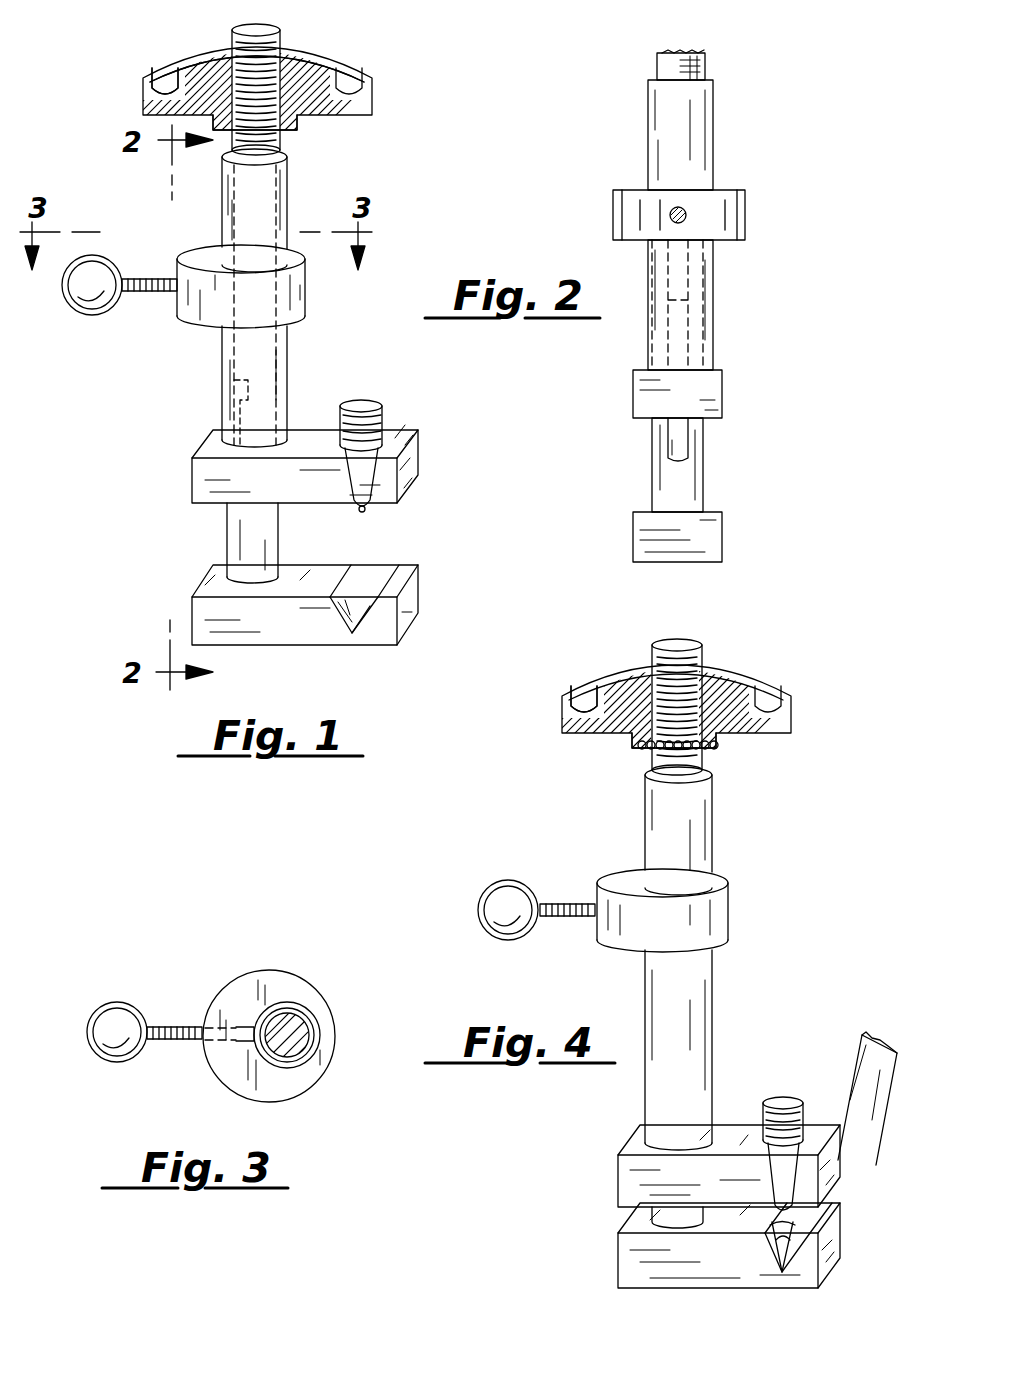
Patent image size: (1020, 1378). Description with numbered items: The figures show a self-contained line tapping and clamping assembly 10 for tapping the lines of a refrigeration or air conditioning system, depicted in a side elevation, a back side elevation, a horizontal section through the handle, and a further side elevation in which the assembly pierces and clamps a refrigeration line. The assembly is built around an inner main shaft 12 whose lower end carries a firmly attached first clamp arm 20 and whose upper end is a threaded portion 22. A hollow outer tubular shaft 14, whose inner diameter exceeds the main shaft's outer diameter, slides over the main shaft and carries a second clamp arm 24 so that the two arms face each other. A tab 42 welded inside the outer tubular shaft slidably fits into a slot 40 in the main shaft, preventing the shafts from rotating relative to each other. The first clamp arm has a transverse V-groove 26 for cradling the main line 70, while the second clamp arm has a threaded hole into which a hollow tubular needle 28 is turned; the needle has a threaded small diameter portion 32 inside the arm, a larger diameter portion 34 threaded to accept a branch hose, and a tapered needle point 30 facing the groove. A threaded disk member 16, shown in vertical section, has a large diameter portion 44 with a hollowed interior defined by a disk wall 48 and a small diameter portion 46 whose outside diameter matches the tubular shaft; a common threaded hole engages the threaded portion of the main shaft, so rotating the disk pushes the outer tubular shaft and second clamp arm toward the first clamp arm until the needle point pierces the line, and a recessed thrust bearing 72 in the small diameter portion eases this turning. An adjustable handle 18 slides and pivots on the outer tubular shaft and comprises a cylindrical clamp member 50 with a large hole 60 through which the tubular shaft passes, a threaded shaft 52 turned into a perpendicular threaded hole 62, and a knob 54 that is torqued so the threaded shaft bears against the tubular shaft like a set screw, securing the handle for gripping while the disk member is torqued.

In FIG. 1, the line tapping and clamping assembly 10 is at (158, 428).
In FIG. 4, the line tapping and clamping assembly 10 is at (567, 1103).
In FIG. 1, the inner main shaft 12 is at (270, 32).
In FIG. 2, the inner main shaft 12 is at (705, 56).
In FIG. 3, the inner main shaft 12 is at (310, 1050).
In FIG. 4, the inner main shaft 12 is at (702, 642).
In FIG. 1, the outer tubular shaft 14 is at (288, 212).
In FIG. 2, the outer tubular shaft 14 is at (714, 106).
In FIG. 3, the outer tubular shaft 14 is at (322, 1028).
In FIG. 4, the outer tubular shaft 14 is at (713, 830).
In FIG. 1, the threaded disk member 16 is at (372, 90).
In FIG. 4, the threaded disk member 16 is at (792, 710).
In FIG. 1, the adjustable handle 18 is at (88, 318).
In FIG. 3, the adjustable handle 18 is at (100, 1060).
In FIG. 4, the adjustable handle 18 is at (490, 890).
In FIG. 1, the first clamp arm 20 is at (400, 610).
In FIG. 2, the first clamp arm 20 is at (723, 540).
In FIG. 4, the first clamp arm 20 is at (618, 1255).
In FIG. 1, the threaded portion 22 is at (286, 143).
In FIG. 1, the second clamp arm 24 is at (416, 470).
In FIG. 2, the second clamp arm 24 is at (723, 395).
In FIG. 4, the second clamp arm 24 is at (618, 1178).
In FIG. 1, the V-groove 26 is at (343, 592).
In FIG. 4, the V-groove 26 is at (800, 1265).
In FIG. 1, the hollow tubular needle 28 is at (385, 420).
In FIG. 4, the hollow tubular needle 28 is at (788, 1100).
In FIG. 1, the tapered needle point 30 is at (367, 512).
In FIG. 4, the tapered needle point 30 is at (802, 1218).
In FIG. 1, the threaded small diameter portion 32 is at (404, 462).
In FIG. 1, the larger diameter portion 34 is at (370, 405).
In FIG. 1, the slot 40 is at (285, 350).
In FIG. 2, the slot 40 is at (712, 258).
In FIG. 1, the tab 42 is at (222, 401).
In FIG. 2, the tab 42 is at (700, 300).
In FIG. 1, the large diameter portion 44 is at (333, 52).
In FIG. 1, the small diameter portion 46 is at (300, 124).
In FIG. 4, the small diameter portion 46 is at (727, 745).
In FIG. 1, the disk wall 48 is at (152, 70).
In FIG. 4, the disk wall 48 is at (575, 688).
In FIG. 1, the cylindrical clamp member 50 is at (198, 312).
In FIG. 2, the cylindrical clamp member 50 is at (620, 192).
In FIG. 3, the cylindrical clamp member 50 is at (255, 975).
In FIG. 4, the cylindrical clamp member 50 is at (735, 910).
In FIG. 1, the threaded shaft 52 is at (152, 291).
In FIG. 2, the threaded shaft 52 is at (670, 214).
In FIG. 3, the threaded shaft 52 is at (172, 1025).
In FIG. 4, the threaded shaft 52 is at (570, 904).
In FIG. 1, the knob 54 is at (105, 258).
In FIG. 3, the knob 54 is at (97, 1004).
In FIG. 4, the knob 54 is at (478, 903).
In FIG. 3, the large hole 60 is at (304, 1010).
In FIG. 3, the threaded hole 62 is at (208, 1070).
In FIG. 4, the main line 70 is at (860, 1060).
In FIG. 4, the thrust bearing 72 is at (650, 756).